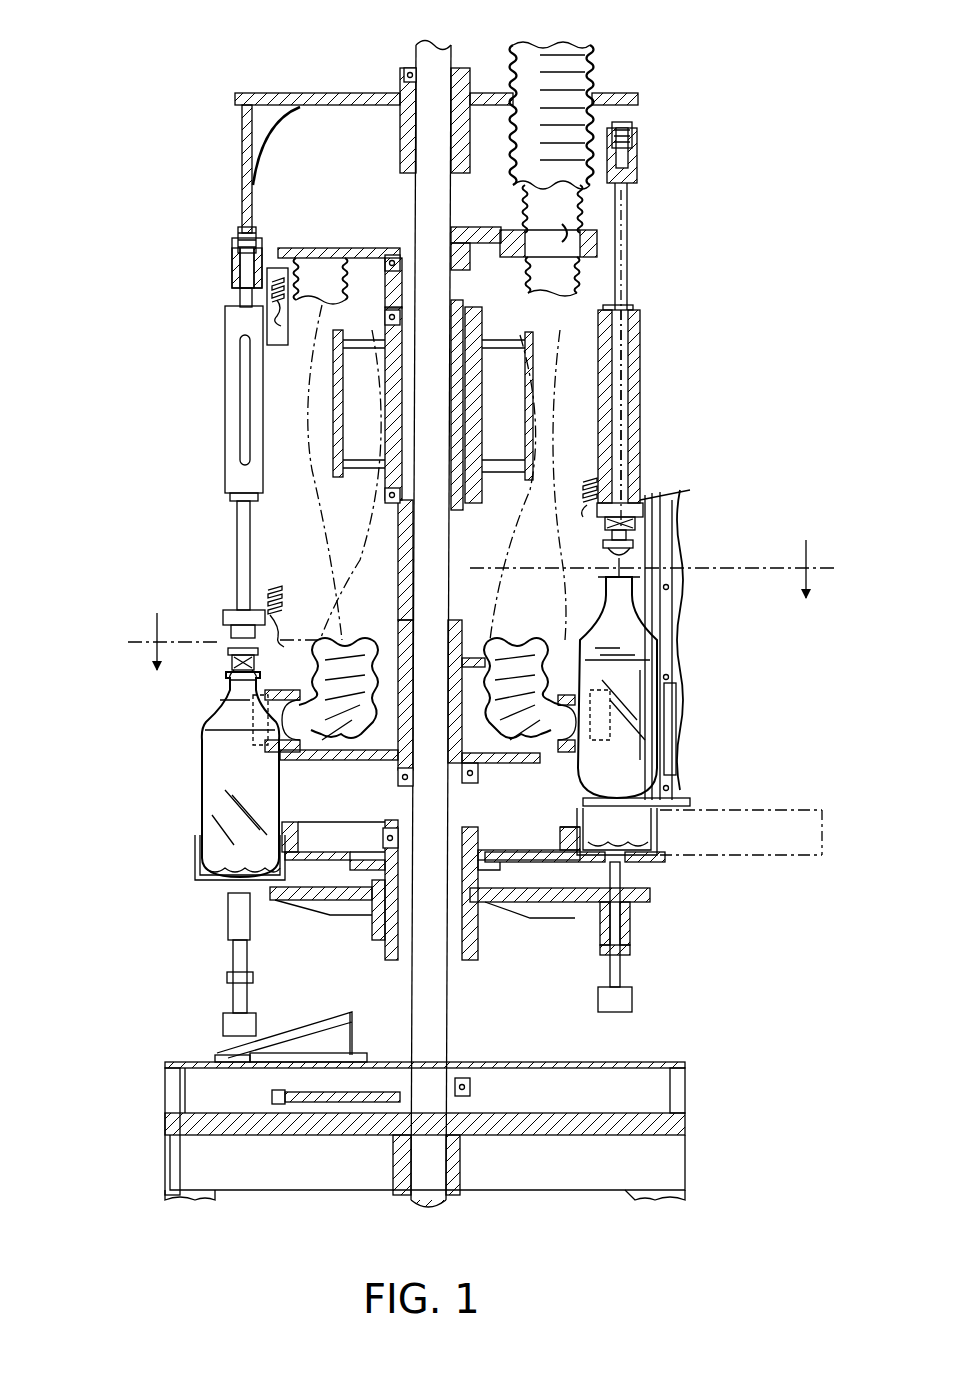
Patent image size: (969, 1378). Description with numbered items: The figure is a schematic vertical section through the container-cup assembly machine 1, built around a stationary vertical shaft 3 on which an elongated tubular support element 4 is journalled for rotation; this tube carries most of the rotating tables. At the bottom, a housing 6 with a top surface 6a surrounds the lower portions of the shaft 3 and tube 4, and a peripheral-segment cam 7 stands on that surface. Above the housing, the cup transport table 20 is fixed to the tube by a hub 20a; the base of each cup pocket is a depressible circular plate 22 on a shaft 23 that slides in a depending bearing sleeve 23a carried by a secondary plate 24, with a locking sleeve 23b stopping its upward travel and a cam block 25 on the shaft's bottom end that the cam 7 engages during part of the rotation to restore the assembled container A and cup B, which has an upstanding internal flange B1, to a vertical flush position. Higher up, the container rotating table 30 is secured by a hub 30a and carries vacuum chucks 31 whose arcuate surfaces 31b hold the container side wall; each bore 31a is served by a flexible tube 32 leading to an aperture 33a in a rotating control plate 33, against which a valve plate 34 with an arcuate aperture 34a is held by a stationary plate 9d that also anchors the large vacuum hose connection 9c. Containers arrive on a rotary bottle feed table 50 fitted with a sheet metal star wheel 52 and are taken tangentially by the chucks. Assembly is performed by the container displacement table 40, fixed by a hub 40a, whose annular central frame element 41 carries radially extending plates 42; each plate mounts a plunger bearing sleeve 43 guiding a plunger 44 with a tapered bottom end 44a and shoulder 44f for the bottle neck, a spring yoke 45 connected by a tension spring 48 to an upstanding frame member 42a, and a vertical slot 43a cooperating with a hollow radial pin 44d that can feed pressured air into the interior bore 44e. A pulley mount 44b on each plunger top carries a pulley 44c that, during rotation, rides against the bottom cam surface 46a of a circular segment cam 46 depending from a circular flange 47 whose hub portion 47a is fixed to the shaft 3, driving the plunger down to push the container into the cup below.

The assembly machine 1 is at (234, 113).
The vertical shaft 3 is at (436, 1235).
The tubular support element 4 is at (452, 1012).
The housing 6 is at (692, 1130).
The top surface 6a is at (600, 1064).
The cam 7 is at (340, 1014).
The hose connection 9c is at (550, 78).
The stationary plate 9d is at (483, 227).
The cup transport table 20 is at (518, 858).
The hub 20a is at (478, 850).
The circular plate 22 is at (640, 862).
The shaft 23 is at (233, 960).
The bearing sleeve 23a is at (630, 925).
The locking sleeve 23b is at (227, 977).
The secondary plate 24 is at (650, 895).
The cam block 25 is at (223, 1025).
The container rotating table 30 is at (504, 757).
The hub 30a is at (495, 800).
The vacuum chuck 31 is at (552, 690).
The bore 31a is at (522, 765).
The arcuate surface 31b is at (277, 690).
The flexible tube 32 is at (523, 640).
The control plate 33 is at (350, 256).
The aperture 33a is at (312, 248).
The valve plate 34 is at (597, 236).
The arcuately extending aperture 34a is at (568, 232).
The container displacement table 40 is at (515, 325).
The hub 40a is at (385, 480).
The annular central frame element 41 is at (527, 405).
The radially extending plate 42 is at (568, 455).
The upstanding frame member 42a is at (292, 327).
The plunger bearing sleeve 43 is at (640, 432).
The vertical slot 43a is at (240, 405).
The plunger 44 is at (237, 545).
The tapered bottom end 44a is at (232, 675).
The pulley mount 44b is at (232, 268).
The pulley 44c is at (252, 235).
The hollow radial pin 44d is at (245, 462).
The interior bore 44e is at (622, 362).
The shoulder 44f is at (228, 660).
The spring yoke 45 is at (230, 612).
The circular segment cam 46 is at (242, 180).
The bottom cam surface 46a is at (236, 242).
The circular flange 47 is at (330, 93).
The hub portion 47a is at (400, 125).
The tension spring 48 is at (298, 598).
The rotary bottle feed table 50 is at (655, 800).
The star wheel 52 is at (668, 620).
The container A is at (205, 762).
The cup B is at (196, 862).
The upstanding internal flange B1 is at (228, 878).